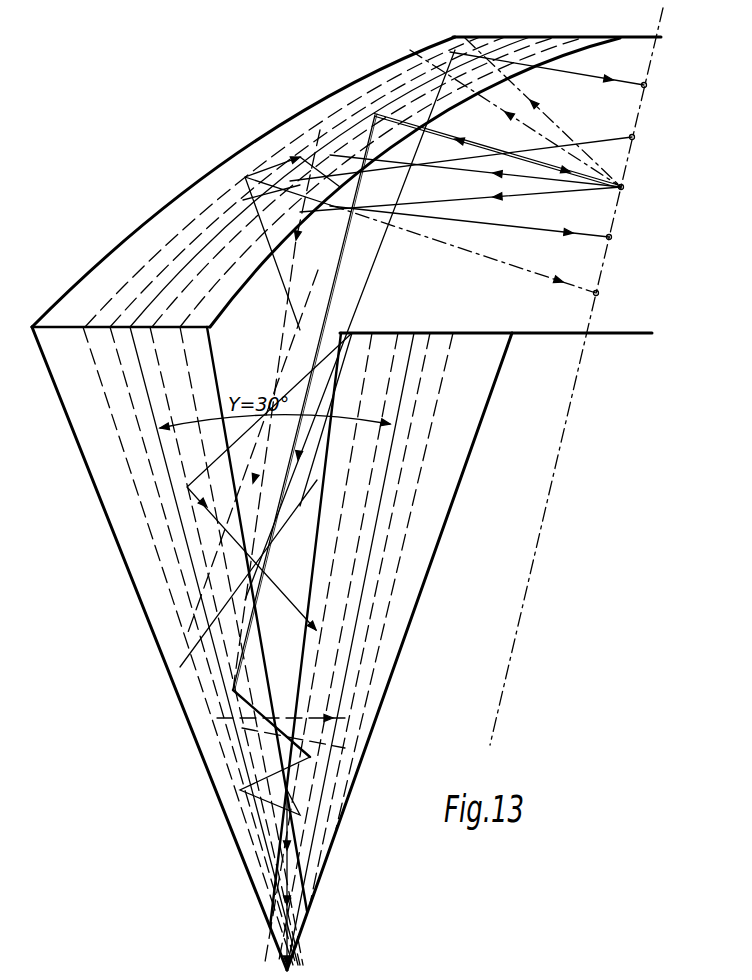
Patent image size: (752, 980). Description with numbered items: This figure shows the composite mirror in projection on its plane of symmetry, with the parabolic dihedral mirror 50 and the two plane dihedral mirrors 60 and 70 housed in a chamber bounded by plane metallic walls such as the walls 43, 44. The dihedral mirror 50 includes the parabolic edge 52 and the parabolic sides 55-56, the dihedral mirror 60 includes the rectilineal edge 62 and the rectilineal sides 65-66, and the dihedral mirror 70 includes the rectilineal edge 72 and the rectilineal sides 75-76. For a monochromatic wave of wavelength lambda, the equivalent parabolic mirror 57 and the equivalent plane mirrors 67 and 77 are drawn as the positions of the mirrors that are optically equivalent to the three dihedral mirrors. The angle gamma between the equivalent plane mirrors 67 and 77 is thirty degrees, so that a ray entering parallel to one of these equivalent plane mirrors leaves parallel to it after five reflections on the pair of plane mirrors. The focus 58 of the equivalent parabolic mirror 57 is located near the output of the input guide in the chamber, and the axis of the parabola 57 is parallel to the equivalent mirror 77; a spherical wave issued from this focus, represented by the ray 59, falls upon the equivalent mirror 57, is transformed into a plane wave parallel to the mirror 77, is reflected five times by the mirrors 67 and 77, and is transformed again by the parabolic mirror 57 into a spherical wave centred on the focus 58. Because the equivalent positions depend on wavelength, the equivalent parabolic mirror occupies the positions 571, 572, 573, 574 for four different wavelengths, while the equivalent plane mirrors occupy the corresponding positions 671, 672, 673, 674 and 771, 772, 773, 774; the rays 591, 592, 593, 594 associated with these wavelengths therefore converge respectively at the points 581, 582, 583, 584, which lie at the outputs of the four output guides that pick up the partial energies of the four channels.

The plane metallic wall 43 is at (607, 36).
The plane metallic wall 44 is at (605, 337).
The dihedral mirror 50 is at (278, 142).
The parabolic edge 52 is at (158, 229).
The parabolic sides 55-56 is at (243, 296).
The equivalent parabolic mirror 57 is at (144, 276).
The equivalent parabolic mirror position 571 is at (222, 283).
The equivalent parabolic mirror position 572 is at (192, 283).
The equivalent parabolic mirror position 573 is at (136, 302).
The equivalent parabolic mirror position 574 is at (100, 308).
The focus 58 is at (624, 188).
The convergence point 581 is at (647, 86).
The convergence point 582 is at (635, 138).
The convergence point 583 is at (612, 238).
The convergence point 584 is at (599, 294).
The ray 59 is at (470, 146).
The ray 591 is at (575, 77).
The ray 592 is at (590, 141).
The ray 593 is at (500, 129).
The ray 594 is at (540, 104).
The dihedral mirror 60 is at (140, 564).
The rectilineal edge 62 is at (84, 446).
The rectilineal sides 65-66 is at (247, 463).
The equivalent plane mirror 67 is at (169, 466).
The equivalent plane mirror position 671 is at (208, 378).
The equivalent plane mirror position 672 is at (170, 372).
The equivalent plane mirror position 673 is at (118, 365).
The equivalent plane mirror position 674 is at (96, 368).
The dihedral mirror 70 is at (412, 556).
The rectilineal edge 72 is at (480, 452).
The rectilineal sides 75-76 is at (316, 556).
The equivalent plane mirror 77 is at (418, 348).
The equivalent plane mirror position 771 is at (376, 348).
The equivalent plane mirror position 772 is at (398, 334).
The equivalent plane mirror position 773 is at (446, 334).
The equivalent plane mirror position 774 is at (465, 348).